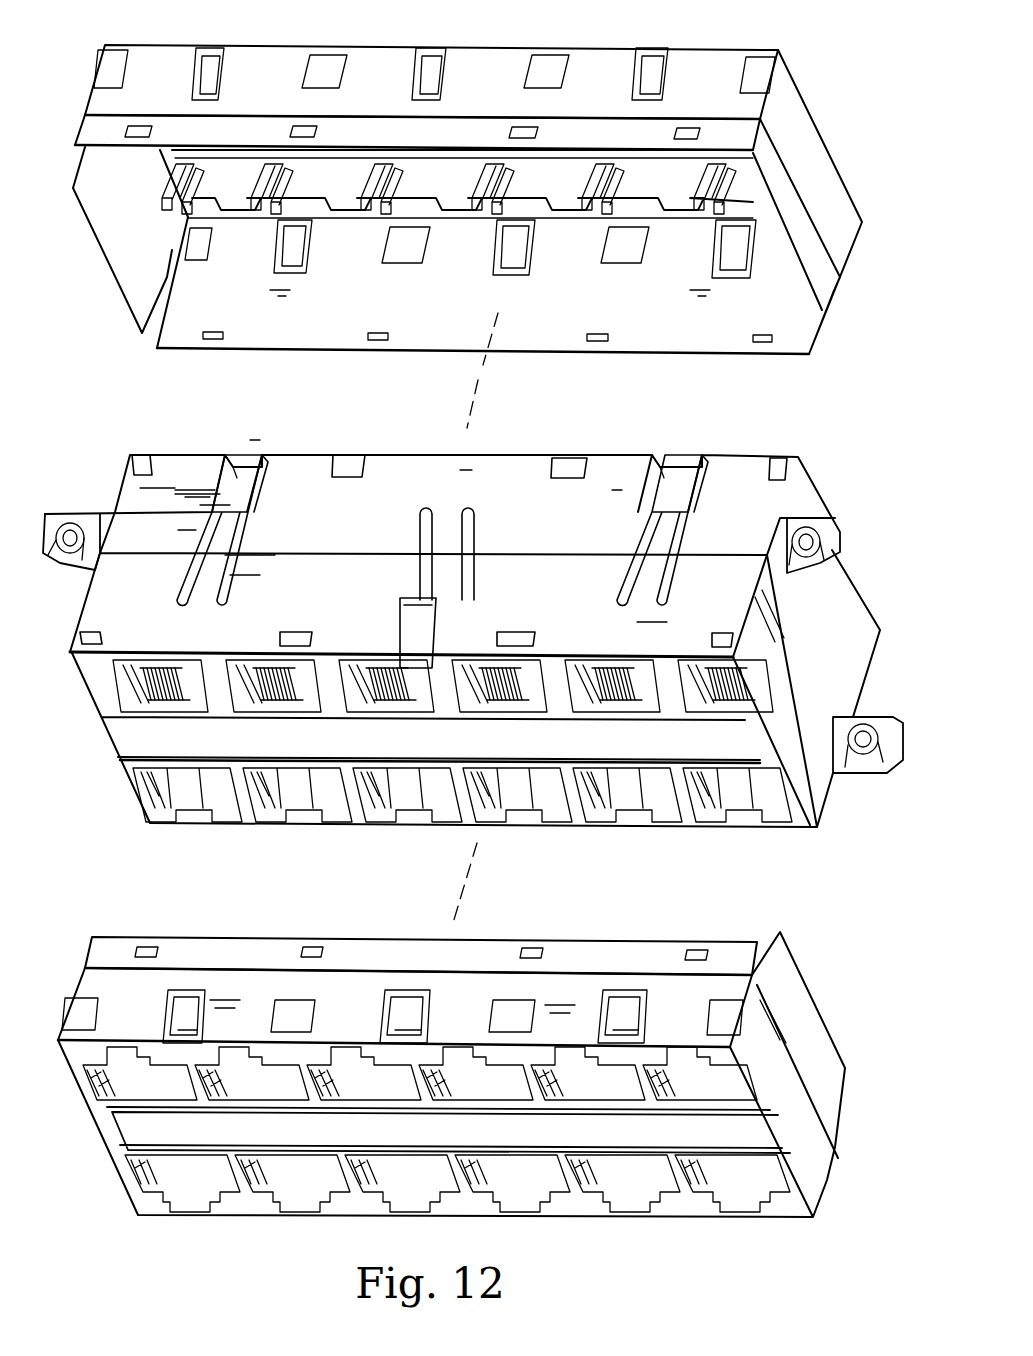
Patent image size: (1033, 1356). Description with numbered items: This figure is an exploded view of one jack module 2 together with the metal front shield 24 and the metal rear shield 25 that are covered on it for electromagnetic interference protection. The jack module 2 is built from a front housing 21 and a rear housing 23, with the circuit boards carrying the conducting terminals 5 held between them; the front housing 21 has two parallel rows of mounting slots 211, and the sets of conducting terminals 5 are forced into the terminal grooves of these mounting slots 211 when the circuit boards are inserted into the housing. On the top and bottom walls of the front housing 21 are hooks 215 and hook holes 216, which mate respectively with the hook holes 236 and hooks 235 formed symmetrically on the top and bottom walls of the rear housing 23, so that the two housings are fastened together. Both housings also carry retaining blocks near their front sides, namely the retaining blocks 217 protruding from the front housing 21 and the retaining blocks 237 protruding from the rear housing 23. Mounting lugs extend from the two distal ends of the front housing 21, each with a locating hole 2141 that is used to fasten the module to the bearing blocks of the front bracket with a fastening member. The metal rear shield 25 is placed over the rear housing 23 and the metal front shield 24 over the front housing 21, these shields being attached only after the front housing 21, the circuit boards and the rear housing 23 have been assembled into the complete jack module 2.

The jack module 2 is at (473, 640).
The conducting terminals 5 is at (137, 682).
The front housing 21 is at (455, 759).
The mounting slots 211 is at (150, 703).
The rear housing 23 is at (473, 599).
The locating hole 2141 is at (878, 717).
The metal front shield 24 is at (827, 1025).
The metal rear shield 25 is at (828, 150).
The hooks 215 is at (267, 488).
The hook holes 216 is at (483, 548).
The retaining blocks 217 is at (100, 635).
The hooks 235 is at (240, 540).
The hook holes 236 is at (436, 600).
The retaining blocks 237 is at (142, 467).